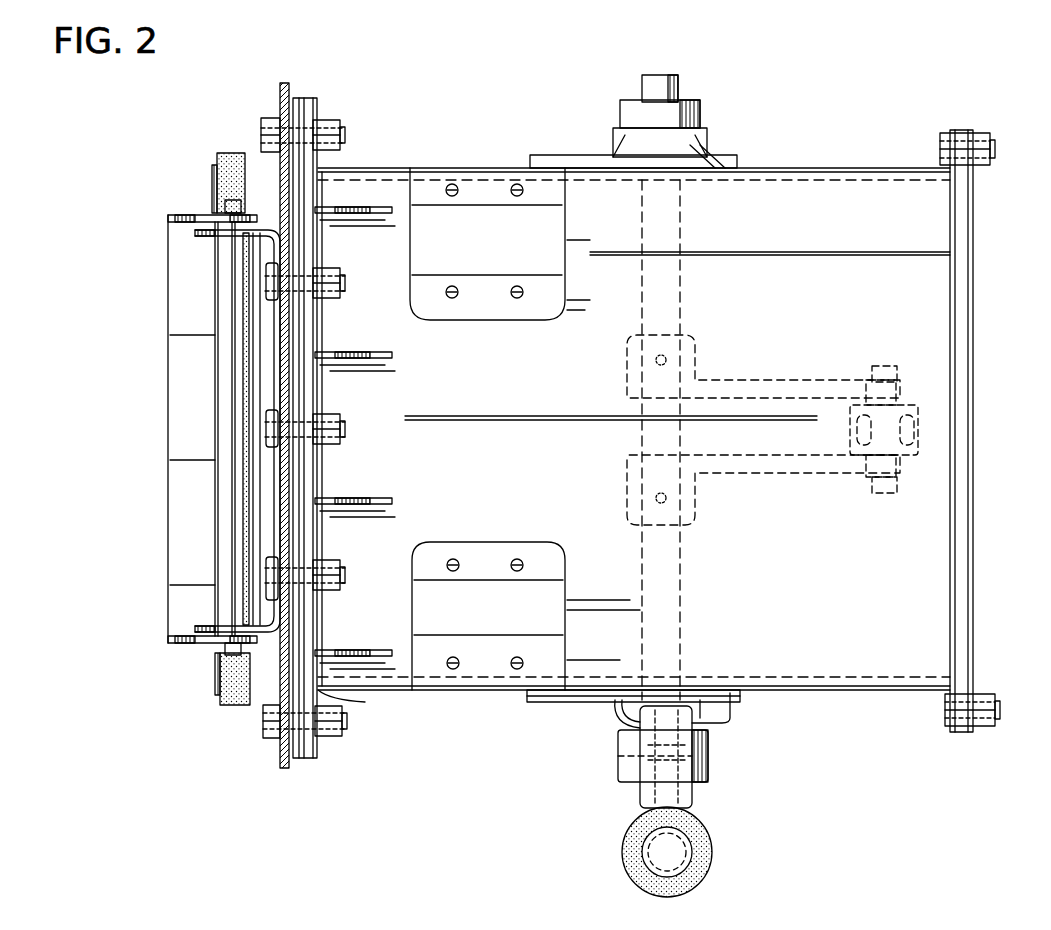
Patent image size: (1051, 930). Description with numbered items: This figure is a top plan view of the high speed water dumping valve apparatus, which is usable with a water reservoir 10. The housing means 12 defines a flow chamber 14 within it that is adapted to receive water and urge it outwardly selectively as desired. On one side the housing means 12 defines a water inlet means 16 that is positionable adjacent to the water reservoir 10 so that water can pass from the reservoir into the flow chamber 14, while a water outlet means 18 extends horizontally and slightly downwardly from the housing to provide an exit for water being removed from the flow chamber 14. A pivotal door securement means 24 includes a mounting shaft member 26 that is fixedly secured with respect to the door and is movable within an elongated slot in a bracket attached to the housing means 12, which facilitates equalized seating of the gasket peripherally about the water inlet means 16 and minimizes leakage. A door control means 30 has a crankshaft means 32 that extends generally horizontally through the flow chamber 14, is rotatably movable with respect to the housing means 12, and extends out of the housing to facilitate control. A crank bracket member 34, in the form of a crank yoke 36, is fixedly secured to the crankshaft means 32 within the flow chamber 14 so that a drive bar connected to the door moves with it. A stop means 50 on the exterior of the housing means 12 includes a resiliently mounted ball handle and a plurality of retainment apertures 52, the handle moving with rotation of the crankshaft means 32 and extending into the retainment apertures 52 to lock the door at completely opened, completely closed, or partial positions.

The water reservoir 10 is at (167, 333).
The housing means 12 is at (790, 172).
The flow chamber 14 is at (910, 275).
The water inlet means 16 is at (292, 222).
The water outlet means 18 is at (962, 312).
The pivotal door securement means 24 is at (225, 205).
The mounting shaft member 26 is at (227, 267).
The door control means 30 is at (920, 410).
The crankshaft means 32 is at (680, 86).
The crank bracket member 34 is at (780, 390).
The crank yoke 36 is at (780, 465).
The stop means 50 is at (700, 752).
The retainment apertures 52 is at (648, 672).